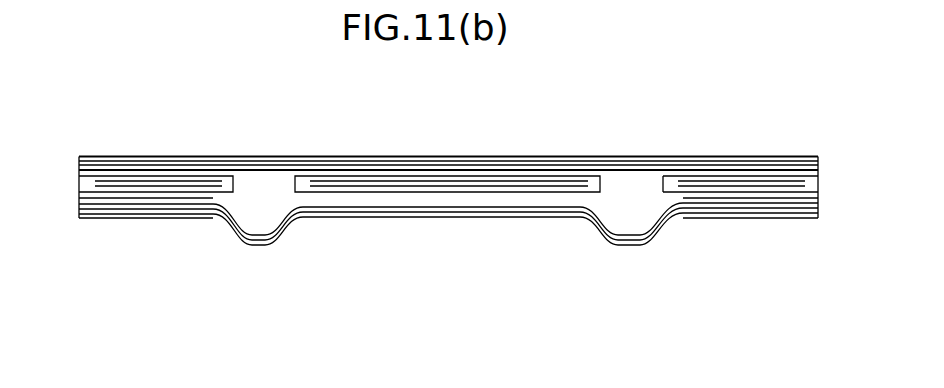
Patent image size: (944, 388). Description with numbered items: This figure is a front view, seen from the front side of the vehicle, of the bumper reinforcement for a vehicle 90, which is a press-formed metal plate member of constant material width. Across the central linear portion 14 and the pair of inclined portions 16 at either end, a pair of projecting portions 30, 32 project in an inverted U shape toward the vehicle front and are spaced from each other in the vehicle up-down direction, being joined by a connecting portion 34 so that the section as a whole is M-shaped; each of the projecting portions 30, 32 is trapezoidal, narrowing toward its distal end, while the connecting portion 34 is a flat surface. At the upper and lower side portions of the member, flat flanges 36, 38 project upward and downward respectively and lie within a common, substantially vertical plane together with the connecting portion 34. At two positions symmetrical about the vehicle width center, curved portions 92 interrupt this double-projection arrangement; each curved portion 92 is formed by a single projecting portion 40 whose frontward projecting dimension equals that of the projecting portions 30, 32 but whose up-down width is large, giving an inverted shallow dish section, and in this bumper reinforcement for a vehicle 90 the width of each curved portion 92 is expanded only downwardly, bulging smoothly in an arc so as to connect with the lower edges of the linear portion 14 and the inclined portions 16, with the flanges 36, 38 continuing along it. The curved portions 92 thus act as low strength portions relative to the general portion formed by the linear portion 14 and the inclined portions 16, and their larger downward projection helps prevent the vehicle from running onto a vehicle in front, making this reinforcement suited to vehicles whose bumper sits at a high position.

The linear portion 14 is at (489, 139).
The inclined portions 16 is at (124, 142).
The projecting portion 30 is at (165, 173).
The projecting portion 32 is at (108, 205).
The connecting portion 34 is at (156, 188).
The flange 36 is at (365, 160).
The flange 38 is at (372, 218).
The projecting portion 40 is at (262, 181).
The bumper reinforcement for a vehicle 90 is at (371, 298).
The curved portions 92 is at (653, 133).